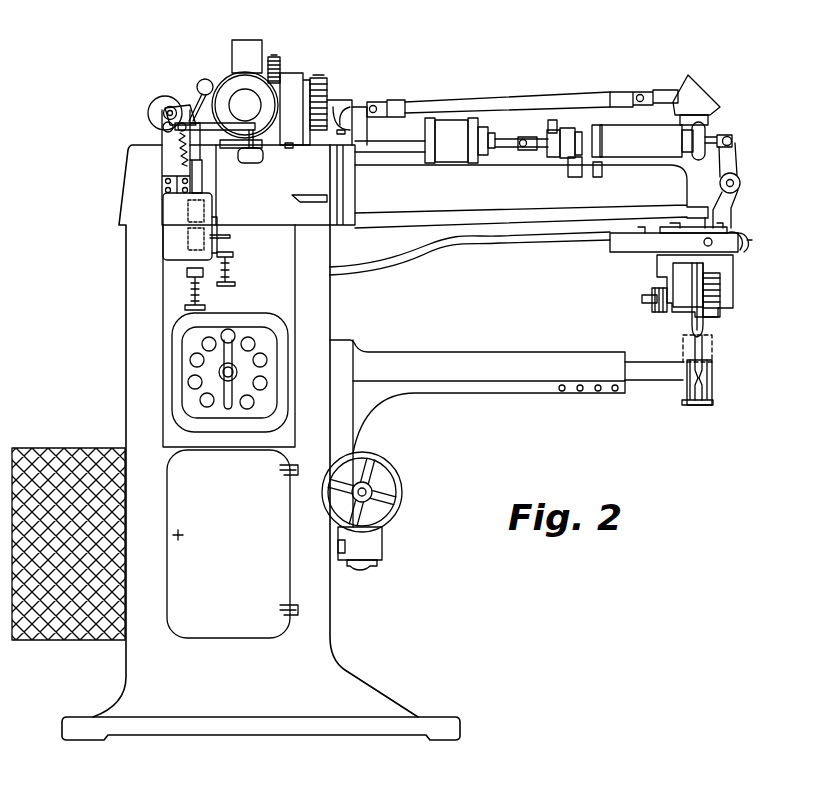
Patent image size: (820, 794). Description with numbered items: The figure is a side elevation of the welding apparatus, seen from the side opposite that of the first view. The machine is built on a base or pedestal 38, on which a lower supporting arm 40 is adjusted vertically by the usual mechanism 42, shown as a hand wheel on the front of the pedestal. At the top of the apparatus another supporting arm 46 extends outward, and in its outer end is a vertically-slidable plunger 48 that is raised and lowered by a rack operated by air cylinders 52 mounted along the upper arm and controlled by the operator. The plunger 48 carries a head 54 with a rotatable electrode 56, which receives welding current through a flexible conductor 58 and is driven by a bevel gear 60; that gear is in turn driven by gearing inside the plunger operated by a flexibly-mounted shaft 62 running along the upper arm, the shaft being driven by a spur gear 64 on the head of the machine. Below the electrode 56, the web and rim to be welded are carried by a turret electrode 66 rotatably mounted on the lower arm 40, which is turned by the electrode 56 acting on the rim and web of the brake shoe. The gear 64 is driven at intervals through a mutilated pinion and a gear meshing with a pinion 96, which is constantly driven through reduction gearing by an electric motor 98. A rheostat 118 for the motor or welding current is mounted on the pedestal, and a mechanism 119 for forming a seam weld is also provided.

The base or pedestal 38 is at (135, 348).
The lower supporting arm 40 is at (541, 367).
The adjusting mechanism 42 is at (398, 503).
The upper supporting arm 46 is at (393, 202).
The plunger 48 is at (708, 127).
The air cylinders 52 is at (448, 132).
The head 54 is at (688, 240).
The rotatable electrode 56 is at (712, 322).
The flexible conductor 58 is at (410, 262).
The bevel gear 60 is at (723, 282).
The flexibly-mounted shaft 62 is at (523, 102).
The spur gear 64 is at (322, 100).
The electrode or turret 66 is at (712, 373).
The pinion 96 is at (276, 62).
The electric motor 98 is at (232, 88).
The rheostat 118 is at (210, 367).
The seam weld mechanism 119 is at (182, 208).